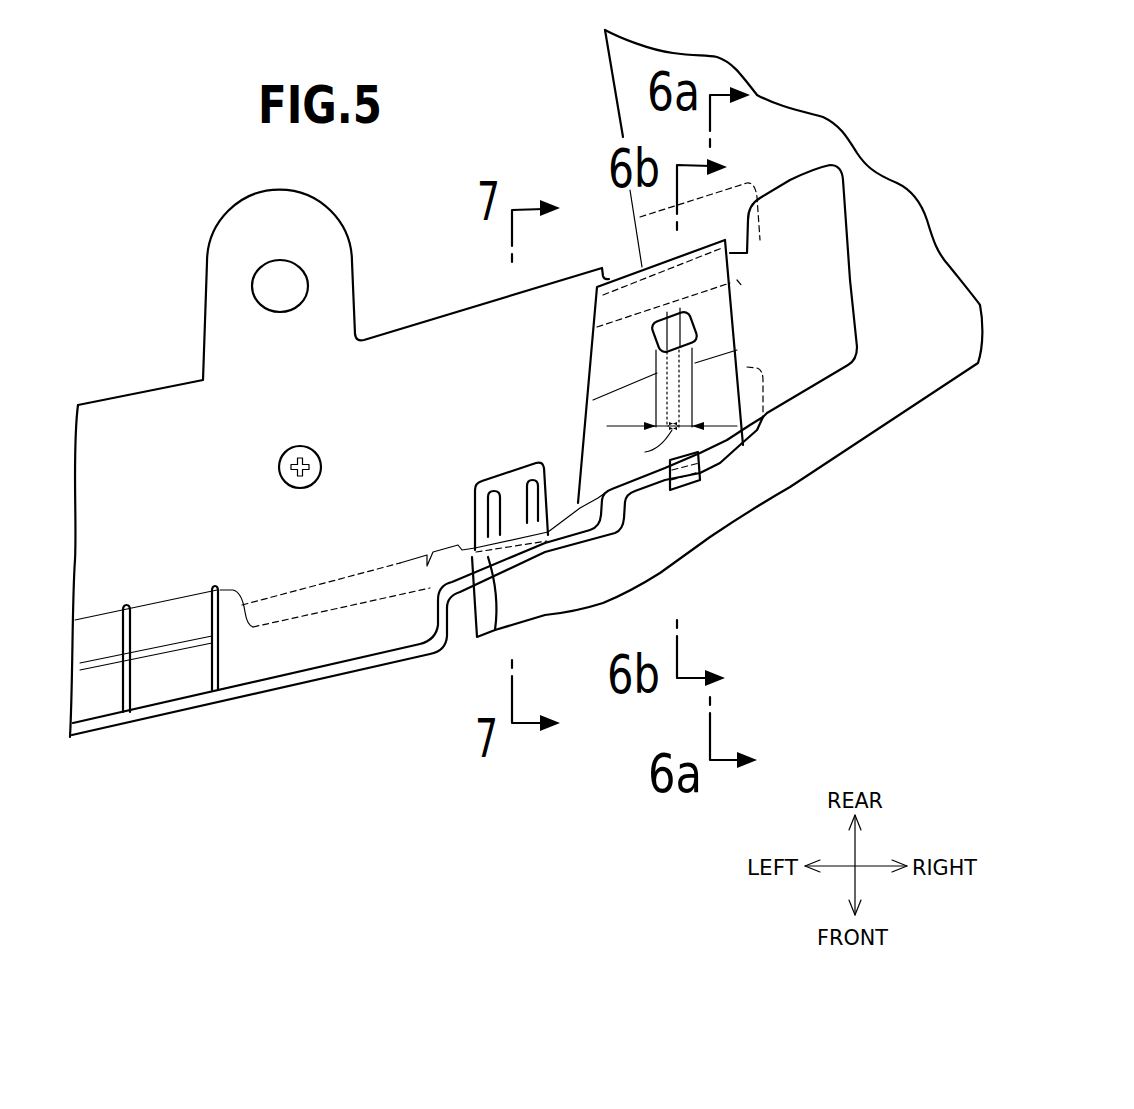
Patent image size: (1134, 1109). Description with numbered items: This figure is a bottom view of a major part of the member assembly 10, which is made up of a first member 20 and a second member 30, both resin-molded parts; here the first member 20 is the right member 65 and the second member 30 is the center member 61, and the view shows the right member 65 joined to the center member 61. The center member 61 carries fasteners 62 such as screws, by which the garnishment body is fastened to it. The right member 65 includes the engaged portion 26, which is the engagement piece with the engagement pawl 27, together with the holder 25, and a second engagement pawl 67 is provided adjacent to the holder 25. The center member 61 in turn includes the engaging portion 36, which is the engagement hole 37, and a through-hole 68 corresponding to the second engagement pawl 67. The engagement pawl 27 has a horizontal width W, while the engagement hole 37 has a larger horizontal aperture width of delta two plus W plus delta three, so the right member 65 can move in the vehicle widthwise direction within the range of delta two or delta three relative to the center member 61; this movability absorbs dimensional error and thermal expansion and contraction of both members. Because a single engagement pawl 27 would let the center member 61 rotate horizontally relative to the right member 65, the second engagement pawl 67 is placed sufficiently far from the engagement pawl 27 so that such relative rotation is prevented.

The member assembly 10 is at (322, 830).
The first member 20 is at (738, 330).
The holder 25 is at (688, 483).
The engaged portion 26 is at (698, 323).
The engagement pawl 27 is at (699, 343).
The second member 30 is at (417, 620).
The engaging portion 36 is at (653, 343).
The engagement hole 37 is at (603, 367).
The center member 61 is at (203, 705).
The fastener 62 is at (292, 455).
The right member 65 is at (790, 487).
The second engagement pawl 67 is at (510, 508).
The through-hole 68 is at (478, 640).